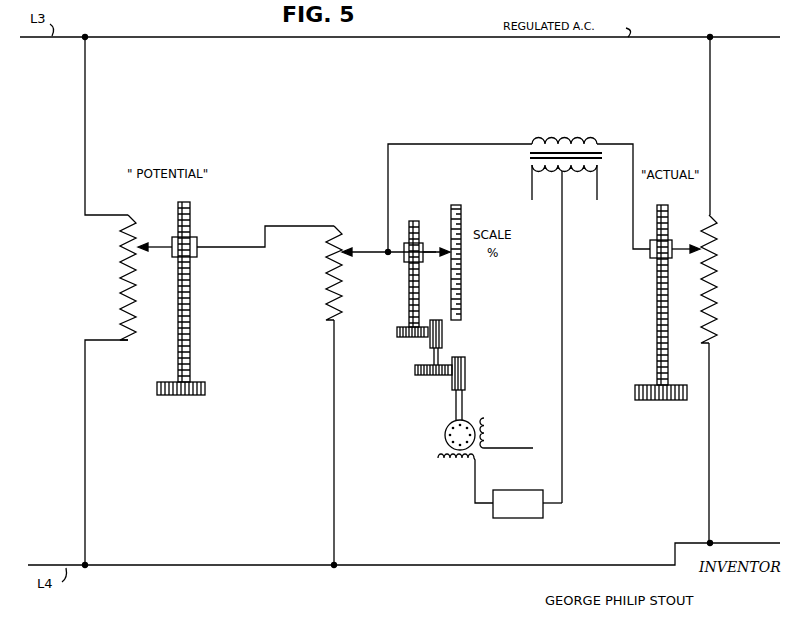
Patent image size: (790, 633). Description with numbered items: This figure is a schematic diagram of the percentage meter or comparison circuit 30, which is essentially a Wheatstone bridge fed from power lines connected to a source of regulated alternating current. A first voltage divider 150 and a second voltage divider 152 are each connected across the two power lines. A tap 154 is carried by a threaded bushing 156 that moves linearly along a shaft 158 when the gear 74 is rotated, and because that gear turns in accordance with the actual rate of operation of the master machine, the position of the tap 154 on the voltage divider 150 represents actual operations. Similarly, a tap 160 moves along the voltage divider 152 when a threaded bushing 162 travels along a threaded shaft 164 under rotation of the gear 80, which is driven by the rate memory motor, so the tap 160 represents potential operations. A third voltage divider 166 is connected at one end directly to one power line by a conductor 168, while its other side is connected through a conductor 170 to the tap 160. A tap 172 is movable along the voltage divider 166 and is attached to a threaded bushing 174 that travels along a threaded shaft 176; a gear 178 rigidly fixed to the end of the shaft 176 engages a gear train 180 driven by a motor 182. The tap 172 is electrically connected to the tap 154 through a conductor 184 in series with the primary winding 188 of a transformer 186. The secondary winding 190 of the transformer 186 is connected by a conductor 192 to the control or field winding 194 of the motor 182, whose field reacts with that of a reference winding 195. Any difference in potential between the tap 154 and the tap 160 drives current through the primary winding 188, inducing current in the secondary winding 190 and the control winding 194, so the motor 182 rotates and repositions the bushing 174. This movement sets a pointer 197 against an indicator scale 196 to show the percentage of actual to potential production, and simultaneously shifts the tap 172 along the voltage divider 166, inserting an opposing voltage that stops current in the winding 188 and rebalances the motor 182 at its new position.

The comparison circuit 30 is at (371, 111).
The gear 74 is at (665, 401).
The gear 80 is at (178, 399).
The first voltage divider 150 is at (718, 296).
The second voltage divider 152 is at (120, 285).
The tap 154 is at (684, 244).
The threaded bushing 156 is at (654, 259).
The shaft 158 is at (657, 318).
The tap 160 is at (154, 242).
The threaded bushing 162 is at (200, 239).
The threaded shaft 164 is at (191, 331).
The third voltage divider 166 is at (324, 290).
The conductor 168 is at (334, 441).
The conductor 170 is at (283, 226).
The tap 172 is at (355, 248).
The threaded bushing 174 is at (404, 260).
The threaded shaft 176 is at (409, 300).
The gear 178 is at (397, 333).
The gear train 180 is at (428, 345).
The motor 182 is at (444, 437).
The conductor 184 is at (478, 130).
The transformer 186 is at (544, 140).
The primary winding 188 is at (584, 139).
The secondary winding 190 is at (532, 173).
The conductor 192 is at (562, 324).
The control winding 194 is at (465, 463).
The reference winding 195 is at (490, 436).
The indicator scale 196 is at (462, 289).
The pointer 197 is at (430, 248).